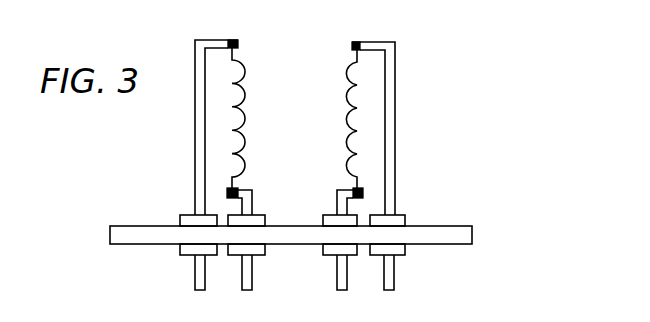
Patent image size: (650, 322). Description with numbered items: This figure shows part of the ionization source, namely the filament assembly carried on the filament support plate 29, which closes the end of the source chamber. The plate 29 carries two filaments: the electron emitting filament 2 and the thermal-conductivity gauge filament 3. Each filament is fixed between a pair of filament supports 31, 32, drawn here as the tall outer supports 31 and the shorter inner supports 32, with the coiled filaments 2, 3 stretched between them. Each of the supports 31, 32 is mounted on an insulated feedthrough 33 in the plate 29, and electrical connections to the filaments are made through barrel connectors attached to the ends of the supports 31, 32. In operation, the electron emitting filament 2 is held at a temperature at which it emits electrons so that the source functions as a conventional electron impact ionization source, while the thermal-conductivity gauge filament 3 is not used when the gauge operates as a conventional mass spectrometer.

The electron emitting filament 2 is at (344, 97).
The thermal-conductivity gauge filament 3 is at (244, 97).
The filament support plate 29 is at (462, 226).
The filament support 31 is at (195, 50).
The filament support 32 is at (339, 189).
The insulated feedthrough 33 is at (180, 255).